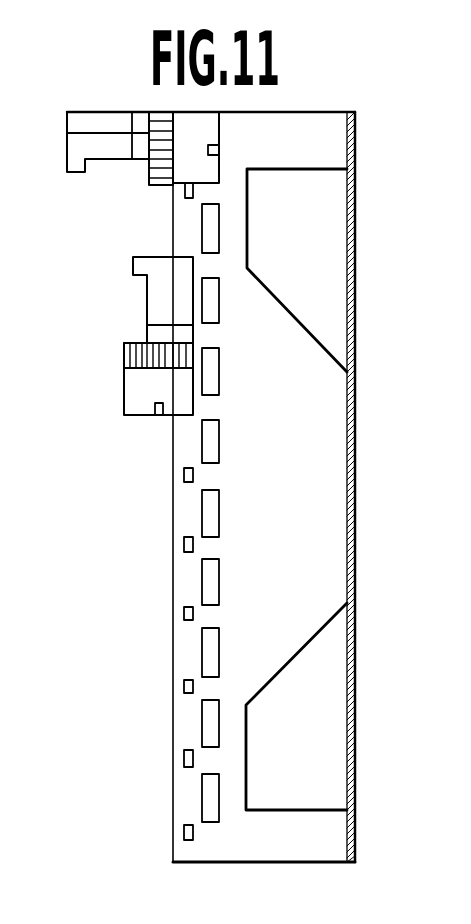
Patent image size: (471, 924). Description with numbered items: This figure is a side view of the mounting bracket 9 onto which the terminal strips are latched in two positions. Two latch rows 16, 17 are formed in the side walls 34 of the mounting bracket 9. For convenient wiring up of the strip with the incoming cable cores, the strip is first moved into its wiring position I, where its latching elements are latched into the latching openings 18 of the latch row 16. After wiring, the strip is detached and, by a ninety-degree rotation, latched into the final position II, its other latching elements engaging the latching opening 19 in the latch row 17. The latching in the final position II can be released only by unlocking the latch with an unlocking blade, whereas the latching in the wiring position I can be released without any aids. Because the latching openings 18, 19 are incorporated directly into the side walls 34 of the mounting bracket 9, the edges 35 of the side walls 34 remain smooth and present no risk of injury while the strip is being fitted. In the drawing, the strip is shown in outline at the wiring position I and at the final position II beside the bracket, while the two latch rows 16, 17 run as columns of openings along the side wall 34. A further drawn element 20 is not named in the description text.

The mounting bracket 9 is at (368, 538).
The latch row 16 is at (190, 843).
The latch row 17 is at (210, 826).
The latching openings 18 is at (186, 686).
The latching opening 19 is at (208, 648).
The edge strip 20 is at (355, 389).
The side walls 34 is at (305, 428).
The edges 35 is at (173, 470).
The wiring position I is at (131, 319).
The final position II is at (129, 171).